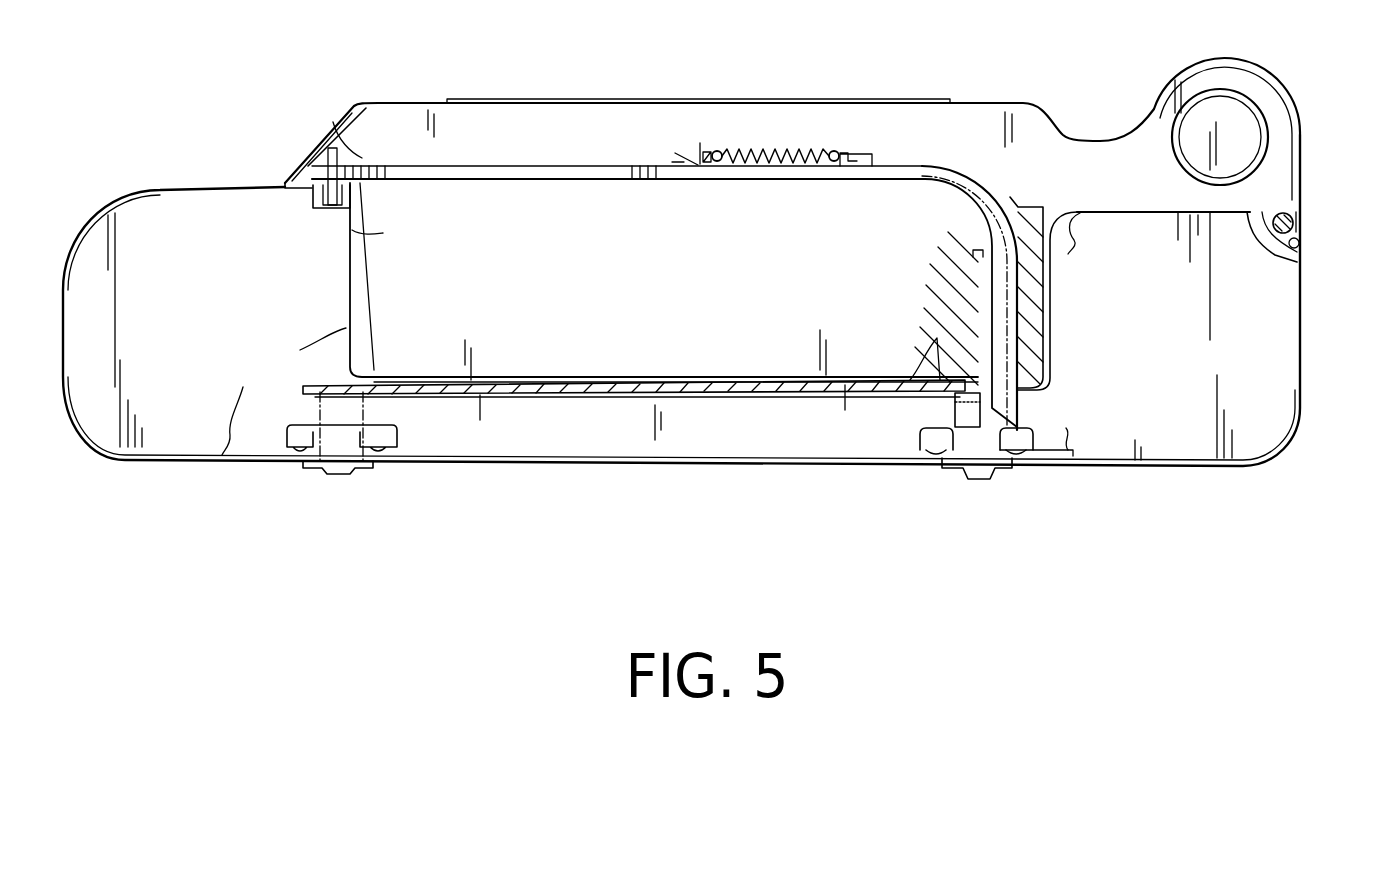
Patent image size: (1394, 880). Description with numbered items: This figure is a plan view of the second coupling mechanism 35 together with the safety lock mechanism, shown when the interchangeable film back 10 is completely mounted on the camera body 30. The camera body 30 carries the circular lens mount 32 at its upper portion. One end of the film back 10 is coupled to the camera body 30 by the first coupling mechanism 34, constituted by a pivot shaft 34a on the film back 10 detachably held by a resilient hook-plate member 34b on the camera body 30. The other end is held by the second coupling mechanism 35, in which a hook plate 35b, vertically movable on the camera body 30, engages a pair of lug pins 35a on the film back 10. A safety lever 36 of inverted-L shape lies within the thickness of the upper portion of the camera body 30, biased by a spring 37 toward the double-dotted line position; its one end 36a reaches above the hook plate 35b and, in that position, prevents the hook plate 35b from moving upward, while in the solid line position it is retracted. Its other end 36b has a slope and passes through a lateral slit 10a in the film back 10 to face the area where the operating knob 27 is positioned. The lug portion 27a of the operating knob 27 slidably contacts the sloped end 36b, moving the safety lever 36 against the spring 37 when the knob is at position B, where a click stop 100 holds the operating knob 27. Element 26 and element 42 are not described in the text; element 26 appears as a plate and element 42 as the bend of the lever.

The interchangeable film back 10 is at (1207, 495).
The lateral slit 10a is at (938, 340).
The plate 26 is at (717, 393).
The operating knob 27 is at (373, 496).
The lug portion 27a is at (965, 408).
The camera body 30 is at (977, 88).
The circular lens mount 32 is at (820, 103).
The first coupling mechanism 34 is at (1319, 227).
The pivot shaft 34a is at (1303, 223).
The resilient hook-plate member 34b is at (1302, 254).
The second coupling mechanism 35 is at (289, 150).
The lug pins 35a is at (329, 208).
The hook plate 35b is at (310, 166).
The safety lever 36 is at (578, 173).
The one end of safety lever 36a is at (330, 146).
The other end of safety lever 36b is at (1020, 410).
The spring 37 is at (781, 155).
The bend portion 42 is at (940, 216).
The click stop 100 is at (930, 452).